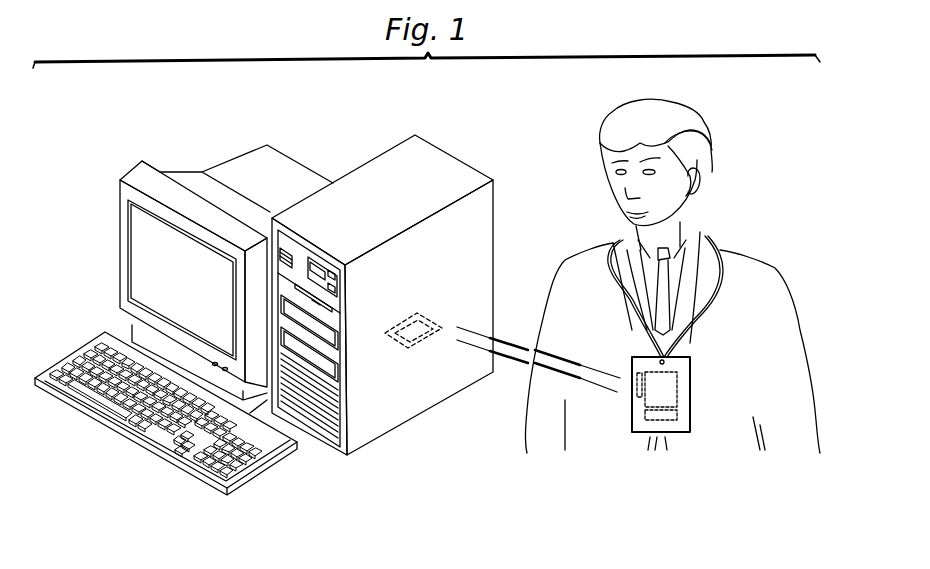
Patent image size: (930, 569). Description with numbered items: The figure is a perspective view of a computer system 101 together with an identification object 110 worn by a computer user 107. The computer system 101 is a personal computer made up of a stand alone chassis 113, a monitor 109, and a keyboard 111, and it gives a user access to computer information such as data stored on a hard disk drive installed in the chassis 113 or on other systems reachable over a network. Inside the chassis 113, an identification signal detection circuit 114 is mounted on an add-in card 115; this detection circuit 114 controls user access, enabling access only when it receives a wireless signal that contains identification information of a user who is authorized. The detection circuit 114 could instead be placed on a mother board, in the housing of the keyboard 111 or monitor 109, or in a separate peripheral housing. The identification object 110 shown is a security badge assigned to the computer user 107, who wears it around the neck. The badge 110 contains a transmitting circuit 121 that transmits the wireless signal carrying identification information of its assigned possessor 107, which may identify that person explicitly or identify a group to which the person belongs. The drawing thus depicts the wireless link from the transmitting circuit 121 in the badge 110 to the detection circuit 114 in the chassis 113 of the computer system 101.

The computer system 101 is at (356, 126).
The computer user 107 is at (713, 146).
The monitor 109 is at (292, 170).
The identification object 110 is at (690, 375).
The keyboard 111 is at (128, 443).
The stand alone chassis 113 is at (443, 165).
The identification signal detection circuit 114 is at (403, 323).
The add-in card 115 is at (455, 306).
The transmitting circuit 121 is at (677, 393).